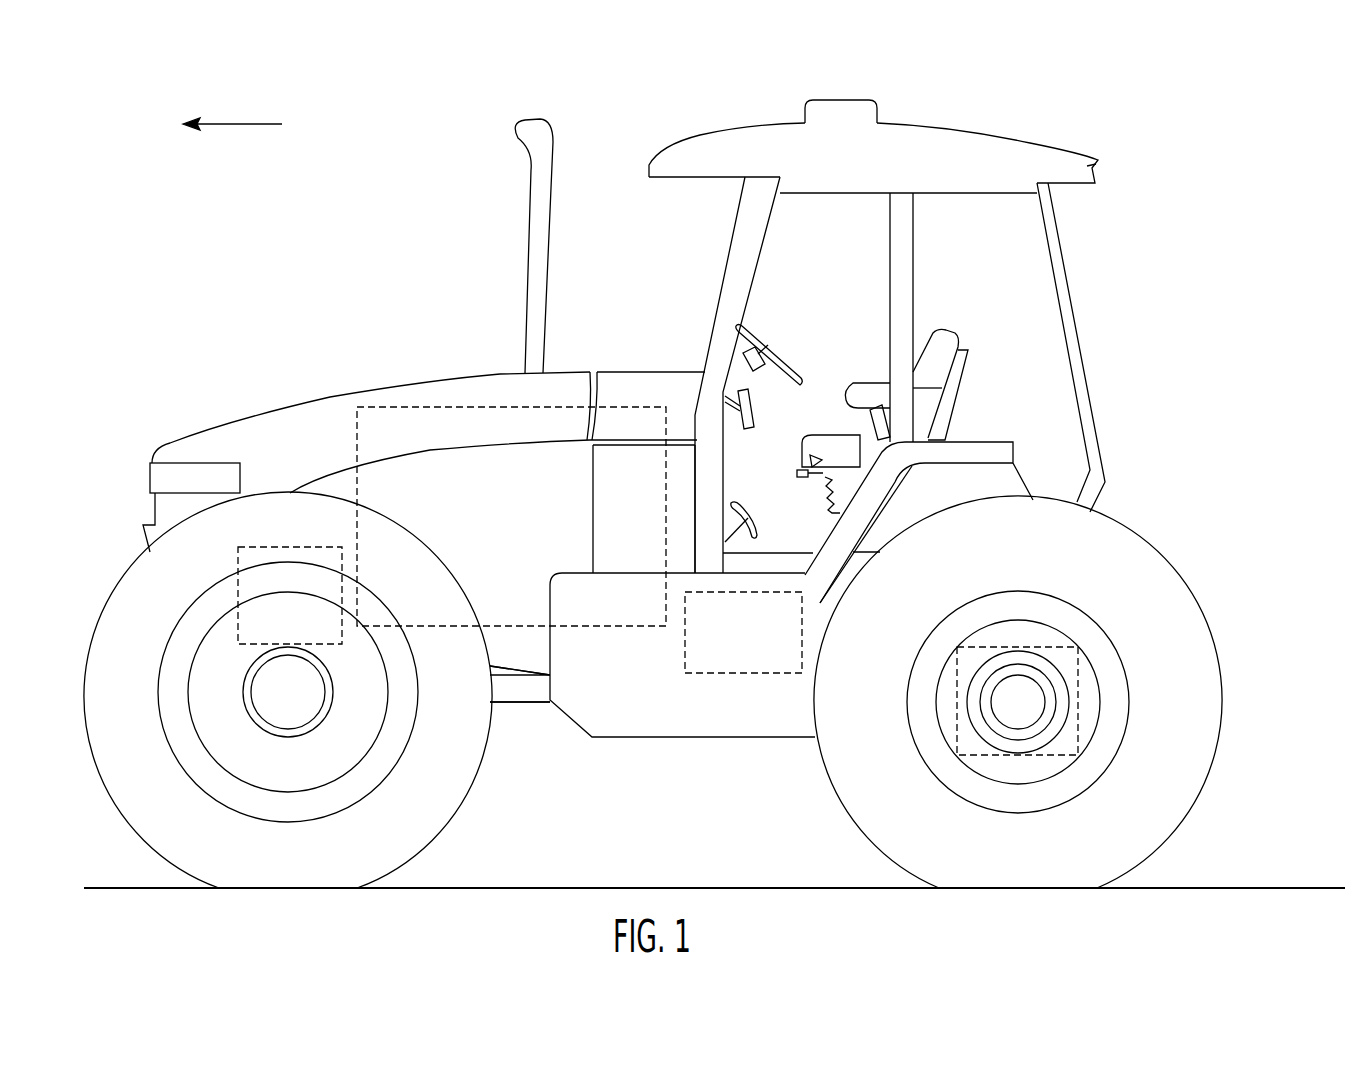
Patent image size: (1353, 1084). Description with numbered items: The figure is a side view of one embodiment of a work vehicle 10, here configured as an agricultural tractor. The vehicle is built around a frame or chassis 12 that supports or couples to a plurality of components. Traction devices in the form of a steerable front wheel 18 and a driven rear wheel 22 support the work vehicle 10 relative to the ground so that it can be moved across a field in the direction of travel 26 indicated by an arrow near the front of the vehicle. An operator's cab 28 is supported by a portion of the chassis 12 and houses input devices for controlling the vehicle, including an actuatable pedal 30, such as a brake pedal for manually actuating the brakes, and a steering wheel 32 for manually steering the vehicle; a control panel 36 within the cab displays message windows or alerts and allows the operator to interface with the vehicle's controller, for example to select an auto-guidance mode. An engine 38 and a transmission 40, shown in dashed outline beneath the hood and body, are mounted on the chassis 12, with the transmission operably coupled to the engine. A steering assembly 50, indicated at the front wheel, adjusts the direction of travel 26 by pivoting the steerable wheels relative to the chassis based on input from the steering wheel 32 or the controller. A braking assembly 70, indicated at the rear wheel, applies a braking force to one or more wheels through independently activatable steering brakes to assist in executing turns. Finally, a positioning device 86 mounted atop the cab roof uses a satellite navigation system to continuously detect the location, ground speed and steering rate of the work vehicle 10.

The work vehicle 10 is at (624, 428).
The chassis 12 is at (517, 693).
The front wheel 18 is at (130, 818).
The rear wheel 22 is at (855, 793).
The direction of travel 26 is at (243, 123).
The operator's cab 28 is at (1098, 163).
The pedal 30 is at (743, 508).
The steering wheel 32 is at (780, 350).
The control panel 36 is at (753, 407).
The engine 38 is at (390, 407).
The transmission 40 is at (685, 675).
The steering assembly 50 is at (307, 547).
The braking assembly 70 is at (1078, 725).
The positioning device 86 is at (858, 97).